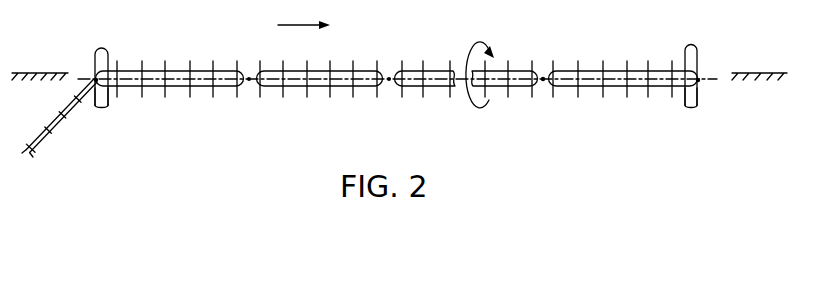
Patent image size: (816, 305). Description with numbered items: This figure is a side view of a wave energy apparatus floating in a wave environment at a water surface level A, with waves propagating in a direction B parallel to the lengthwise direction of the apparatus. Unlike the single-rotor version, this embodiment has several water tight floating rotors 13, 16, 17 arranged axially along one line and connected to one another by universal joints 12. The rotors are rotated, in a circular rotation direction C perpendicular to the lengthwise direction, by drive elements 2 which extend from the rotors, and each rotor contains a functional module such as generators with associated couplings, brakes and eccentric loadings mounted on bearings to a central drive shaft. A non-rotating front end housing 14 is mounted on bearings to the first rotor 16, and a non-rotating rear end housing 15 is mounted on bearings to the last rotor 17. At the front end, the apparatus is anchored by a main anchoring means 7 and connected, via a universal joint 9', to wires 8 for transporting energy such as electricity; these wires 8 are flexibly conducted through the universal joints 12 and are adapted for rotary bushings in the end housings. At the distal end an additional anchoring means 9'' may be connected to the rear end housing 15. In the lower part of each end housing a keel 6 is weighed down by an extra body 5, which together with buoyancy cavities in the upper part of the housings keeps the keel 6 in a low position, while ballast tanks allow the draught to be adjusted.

The drive element 2 is at (397, 52).
The extra body 5 is at (99, 109).
The keel 6 is at (109, 98).
The main anchoring means 7 is at (51, 125).
The wires 8 is at (34, 149).
The universal joint 9' is at (66, 94).
The additional anchoring means 9'' is at (741, 95).
The universal joint 12 is at (543, 79).
The rotor 13 is at (333, 74).
The front end housing 14 is at (111, 65).
The rear end housing 15 is at (693, 62).
The first rotor 16 is at (196, 73).
The last rotor 17 is at (612, 73).
The water surface level A is at (40, 72).
The wave propagation direction B is at (304, 14).
The circular rotation direction C is at (480, 108).